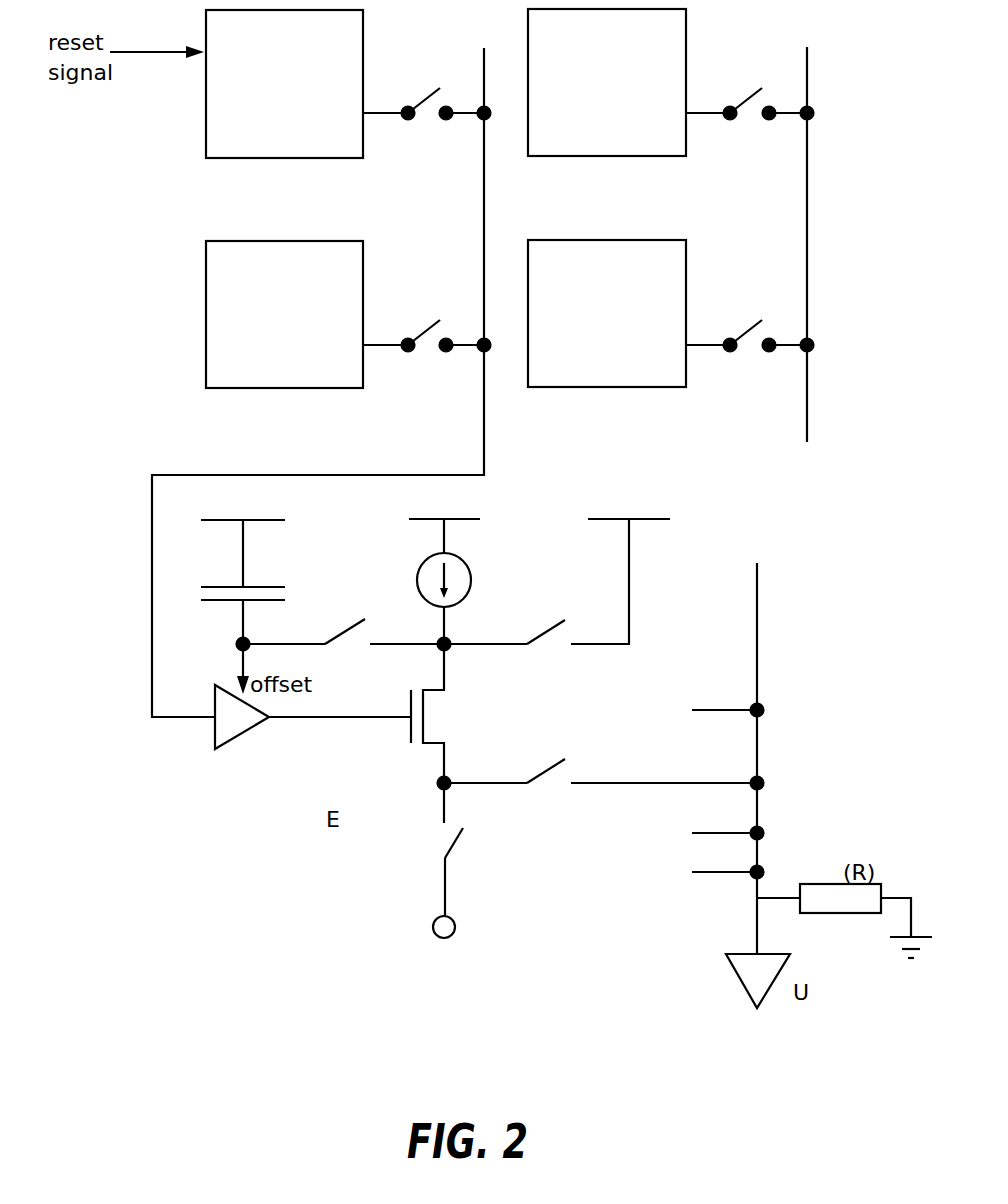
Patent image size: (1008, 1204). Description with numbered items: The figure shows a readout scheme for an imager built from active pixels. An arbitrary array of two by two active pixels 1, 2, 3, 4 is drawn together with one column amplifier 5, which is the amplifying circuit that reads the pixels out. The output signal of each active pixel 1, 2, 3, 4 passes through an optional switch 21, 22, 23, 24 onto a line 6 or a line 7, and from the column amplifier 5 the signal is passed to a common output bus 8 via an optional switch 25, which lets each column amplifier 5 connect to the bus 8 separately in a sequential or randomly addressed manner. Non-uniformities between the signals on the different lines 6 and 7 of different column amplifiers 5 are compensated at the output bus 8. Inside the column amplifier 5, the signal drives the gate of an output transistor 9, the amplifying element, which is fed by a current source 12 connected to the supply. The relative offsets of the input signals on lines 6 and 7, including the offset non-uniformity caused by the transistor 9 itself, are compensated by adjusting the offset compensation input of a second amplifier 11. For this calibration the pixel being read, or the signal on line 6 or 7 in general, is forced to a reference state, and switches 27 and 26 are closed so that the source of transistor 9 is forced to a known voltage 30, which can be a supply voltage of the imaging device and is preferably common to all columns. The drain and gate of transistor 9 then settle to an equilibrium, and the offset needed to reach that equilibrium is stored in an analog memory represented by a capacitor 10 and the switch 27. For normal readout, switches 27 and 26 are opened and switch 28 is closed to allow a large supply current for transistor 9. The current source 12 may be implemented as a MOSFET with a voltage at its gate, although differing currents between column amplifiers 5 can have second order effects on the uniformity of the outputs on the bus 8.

The active pixel 1 is at (333, 158).
The active pixel 2 is at (333, 388).
The active pixel 3 is at (655, 156).
The active pixel 4 is at (655, 387).
The column amplifier 5 is at (350, 902).
The line 6 is at (484, 222).
The line 7 is at (807, 223).
The output bus 8 is at (758, 663).
The output transistor 9 is at (445, 720).
The capacitor 10 is at (243, 568).
The second amplifier 11 is at (240, 733).
The current source 12 is at (472, 577).
The switch 21 is at (431, 92).
The switch 22 is at (432, 324).
The switch 23 is at (753, 92).
The switch 24 is at (754, 324).
The switch 25 is at (554, 763).
The switch 26 is at (457, 838).
The switch 27 is at (353, 627).
The switch 28 is at (554, 624).
The known voltage 30 is at (445, 938).